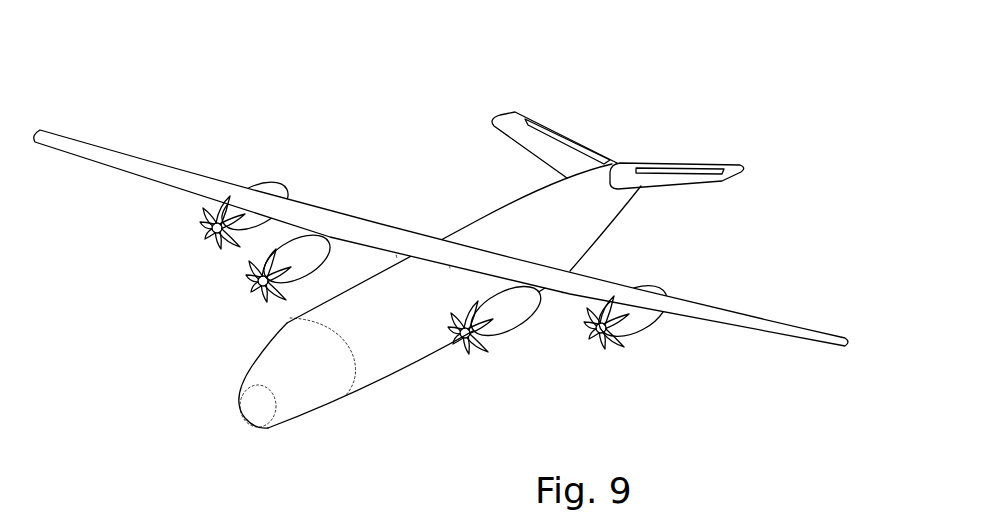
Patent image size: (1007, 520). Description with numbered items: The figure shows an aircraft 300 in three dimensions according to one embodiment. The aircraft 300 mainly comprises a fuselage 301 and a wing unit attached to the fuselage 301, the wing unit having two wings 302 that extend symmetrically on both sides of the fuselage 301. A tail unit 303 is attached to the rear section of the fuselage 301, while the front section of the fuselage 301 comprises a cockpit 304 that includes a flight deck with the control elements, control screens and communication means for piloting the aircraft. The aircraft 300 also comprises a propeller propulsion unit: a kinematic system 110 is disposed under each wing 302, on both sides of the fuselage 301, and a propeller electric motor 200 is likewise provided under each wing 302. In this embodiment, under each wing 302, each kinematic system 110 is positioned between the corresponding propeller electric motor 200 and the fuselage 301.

The aircraft 300 is at (441, 249).
The fuselage 301 is at (436, 212).
The wing 302 is at (247, 180).
The tail unit 303 is at (577, 140).
The cockpit 304 is at (250, 378).
The propeller electric motor 200 is at (200, 258).
The kinematic system 110 is at (253, 318).